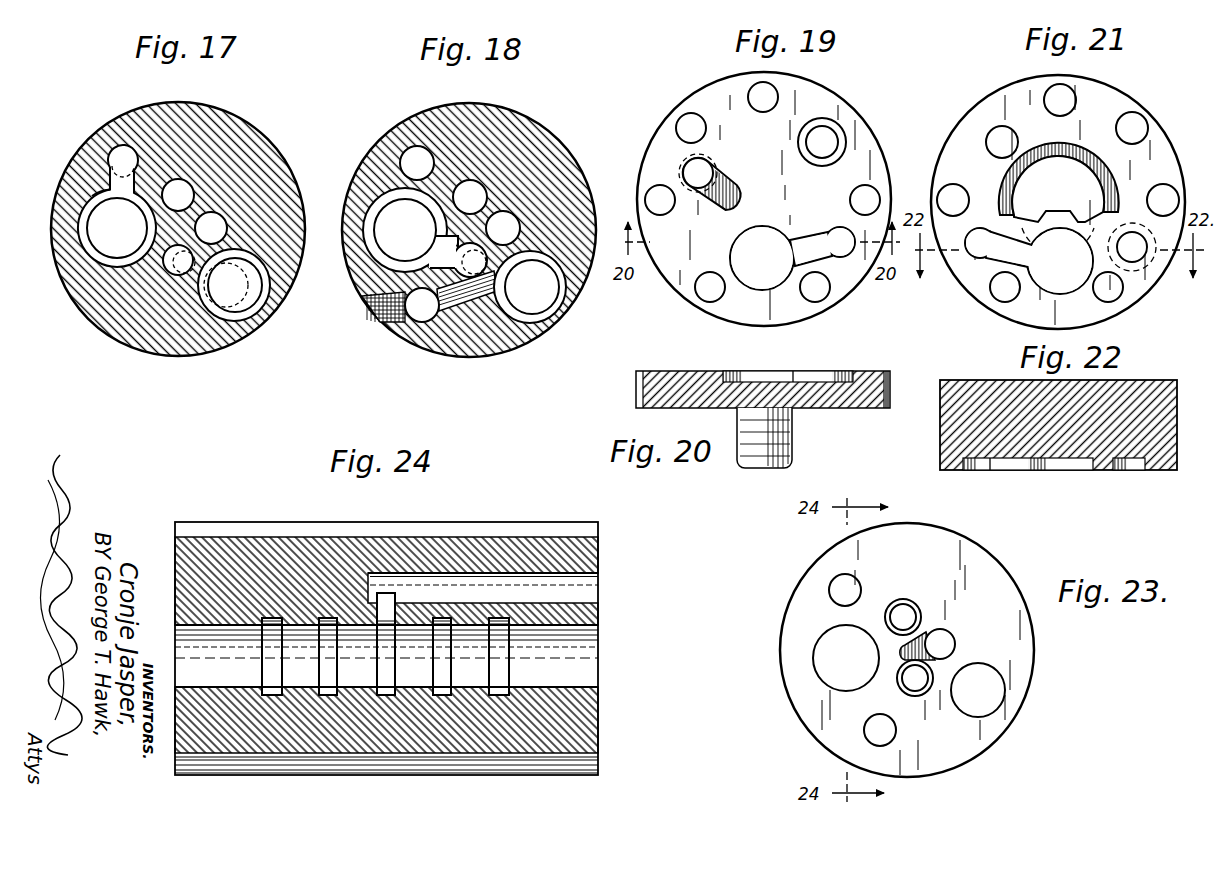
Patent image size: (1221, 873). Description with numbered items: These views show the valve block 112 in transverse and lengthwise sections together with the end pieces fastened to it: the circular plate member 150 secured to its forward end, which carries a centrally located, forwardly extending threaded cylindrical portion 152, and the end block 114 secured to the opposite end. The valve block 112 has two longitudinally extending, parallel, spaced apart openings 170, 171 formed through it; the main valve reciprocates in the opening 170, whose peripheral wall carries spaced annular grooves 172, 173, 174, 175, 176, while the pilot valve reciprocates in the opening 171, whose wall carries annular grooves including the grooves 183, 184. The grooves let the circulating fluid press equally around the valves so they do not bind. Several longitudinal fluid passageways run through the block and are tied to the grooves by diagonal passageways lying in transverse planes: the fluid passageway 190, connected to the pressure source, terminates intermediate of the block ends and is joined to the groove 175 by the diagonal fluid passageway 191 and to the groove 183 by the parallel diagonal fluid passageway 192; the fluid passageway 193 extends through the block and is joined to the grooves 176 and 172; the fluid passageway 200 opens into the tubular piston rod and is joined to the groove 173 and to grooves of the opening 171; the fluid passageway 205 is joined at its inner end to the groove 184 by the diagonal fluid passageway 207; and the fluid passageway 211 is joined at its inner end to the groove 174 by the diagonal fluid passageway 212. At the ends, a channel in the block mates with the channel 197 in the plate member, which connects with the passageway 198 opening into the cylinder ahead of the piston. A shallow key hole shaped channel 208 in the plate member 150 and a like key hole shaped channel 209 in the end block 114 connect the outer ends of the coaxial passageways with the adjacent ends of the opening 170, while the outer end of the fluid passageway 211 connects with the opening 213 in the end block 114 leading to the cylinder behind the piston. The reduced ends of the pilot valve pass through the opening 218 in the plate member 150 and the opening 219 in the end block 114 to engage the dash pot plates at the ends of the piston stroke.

In FIG. 17, the valve block 112 is at (256, 151).
In FIG. 18, the valve block 112 is at (542, 135).
In FIG. 24, the valve block 112 is at (533, 530).
In FIG. 23, the valve block 112 is at (1028, 624).
In FIG. 21, the end block 114 is at (962, 126).
In FIG. 22, the end block 114 is at (1163, 383).
In FIG. 19, the plate member 150 is at (835, 91).
In FIG. 20, the plate member 150 is at (656, 378).
In FIG. 20, the threaded cylindrical portion 152 is at (790, 432).
In FIG. 17, the opening 170 is at (98, 238).
In FIG. 18, the opening 170 is at (397, 218).
In FIG. 24, the opening 170 is at (588, 658).
In FIG. 23, the opening 170 is at (820, 643).
In FIG. 17, the opening 171 is at (267, 303).
In FIG. 18, the opening 171 is at (543, 287).
In FIG. 23, the opening 171 is at (997, 698).
In FIG. 24, the annular groove 172 is at (261, 673).
In FIG. 24, the annular groove 173 is at (327, 690).
In FIG. 17, the annular groove 174 is at (104, 190).
In FIG. 24, the annular groove 174 is at (387, 690).
In FIG. 18, the annular groove 175 is at (375, 247).
In FIG. 24, the annular groove 175 is at (443, 688).
In FIG. 24, the annular groove 176 is at (497, 690).
In FIG. 17, the annular groove 183 is at (270, 286).
In FIG. 18, the annular groove 184 is at (555, 305).
In FIG. 17, the fluid passageway 190 is at (160, 267).
In FIG. 18, the fluid passageway 190 is at (518, 340).
In FIG. 23, the fluid passageway 190 is at (917, 687).
In FIG. 18, the diagonal fluid passageway 191 is at (447, 237).
In FIG. 17, the diagonal fluid passageway 192 is at (183, 273).
In FIG. 17, the fluid passageway 193 is at (183, 180).
In FIG. 18, the fluid passageway 193 is at (472, 188).
In FIG. 23, the fluid passageway 193 is at (902, 602).
In FIG. 19, the channel 197 is at (726, 182).
In FIG. 19, the passageway 198 is at (683, 167).
In FIG. 17, the fluid passageway 200 is at (227, 223).
In FIG. 18, the fluid passageway 200 is at (513, 223).
In FIG. 23, the fluid passageway 200 is at (953, 650).
In FIG. 18, the fluid passageway 205 is at (412, 310).
In FIG. 23, the fluid passageway 205 is at (863, 728).
In FIG. 18, the diagonal fluid passageway 207 is at (463, 308).
In FIG. 19, the key hole shaped channel 208 is at (823, 247).
In FIG. 20, the key hole shaped channel 208 is at (805, 378).
In FIG. 21, the key hole shaped channel 209 is at (1002, 250).
In FIG. 22, the key hole shaped channel 209 is at (1025, 466).
In FIG. 17, the fluid passageway 211 is at (122, 143).
In FIG. 18, the fluid passageway 211 is at (414, 147).
In FIG. 24, the fluid passageway 211 is at (467, 587).
In FIG. 23, the fluid passageway 211 is at (836, 578).
In FIG. 17, the diagonal fluid passageway 212 is at (119, 184).
In FIG. 24, the diagonal fluid passageway 212 is at (387, 603).
In FIG. 21, the opening 213 is at (1130, 235).
In FIG. 22, the opening 213 is at (1127, 463).
In FIG. 19, the opening 218 is at (828, 142).
In FIG. 21, the opening 219 is at (998, 130).